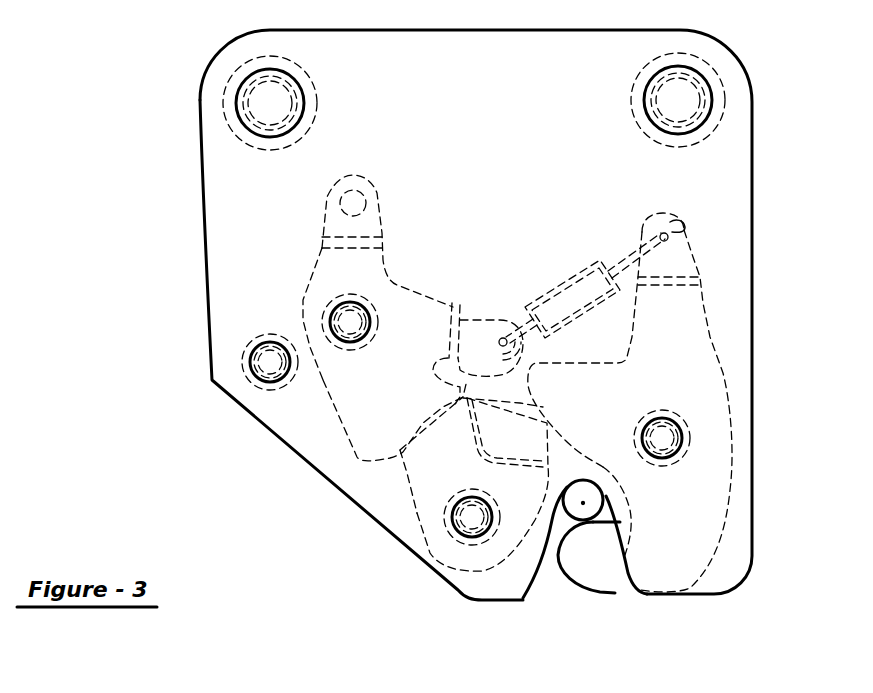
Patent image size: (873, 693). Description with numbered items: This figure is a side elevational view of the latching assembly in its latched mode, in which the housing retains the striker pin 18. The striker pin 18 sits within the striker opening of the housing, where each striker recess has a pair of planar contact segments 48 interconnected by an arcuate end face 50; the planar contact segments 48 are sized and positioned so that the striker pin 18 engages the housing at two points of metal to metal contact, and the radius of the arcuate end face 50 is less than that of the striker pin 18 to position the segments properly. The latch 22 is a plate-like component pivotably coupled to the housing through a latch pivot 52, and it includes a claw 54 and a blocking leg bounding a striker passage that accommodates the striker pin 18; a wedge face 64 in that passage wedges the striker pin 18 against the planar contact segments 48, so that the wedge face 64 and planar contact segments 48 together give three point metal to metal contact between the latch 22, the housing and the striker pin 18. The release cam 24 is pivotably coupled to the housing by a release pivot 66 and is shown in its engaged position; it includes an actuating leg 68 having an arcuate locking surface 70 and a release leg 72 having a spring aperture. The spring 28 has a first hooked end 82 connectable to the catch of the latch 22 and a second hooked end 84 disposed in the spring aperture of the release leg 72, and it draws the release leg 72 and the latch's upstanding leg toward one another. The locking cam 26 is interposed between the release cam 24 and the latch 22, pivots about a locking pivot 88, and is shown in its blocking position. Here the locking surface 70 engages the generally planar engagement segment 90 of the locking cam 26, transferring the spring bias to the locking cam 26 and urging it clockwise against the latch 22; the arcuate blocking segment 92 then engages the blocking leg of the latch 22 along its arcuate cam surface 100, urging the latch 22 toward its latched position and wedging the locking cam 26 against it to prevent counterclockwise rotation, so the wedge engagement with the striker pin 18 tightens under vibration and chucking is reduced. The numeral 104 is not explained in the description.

The striker pin 18 is at (583, 503).
The latch 22 is at (705, 322).
The release cam 24 is at (306, 294).
The locking cam 26 is at (430, 477).
The spring 28 is at (557, 285).
The planar contact segments 48 is at (605, 492).
The arcuate end face 50 is at (584, 480).
The latch pivot 52 is at (662, 438).
The claw 54 is at (587, 567).
The wedge face 64 is at (597, 523).
The release pivot 66 is at (350, 322).
The actuating leg 68 is at (380, 412).
The arcuate locking surface 70 is at (400, 452).
The release leg 72 is at (470, 328).
The first hooked end 82 is at (665, 232).
The second hooked end 84 is at (503, 338).
The locking pivot 88 is at (472, 517).
The engagement segment 90 is at (408, 452).
The arcuate blocking segment 92 is at (537, 407).
The arcuate cam surface 100 is at (545, 425).
The lever lobe 104 is at (605, 488).